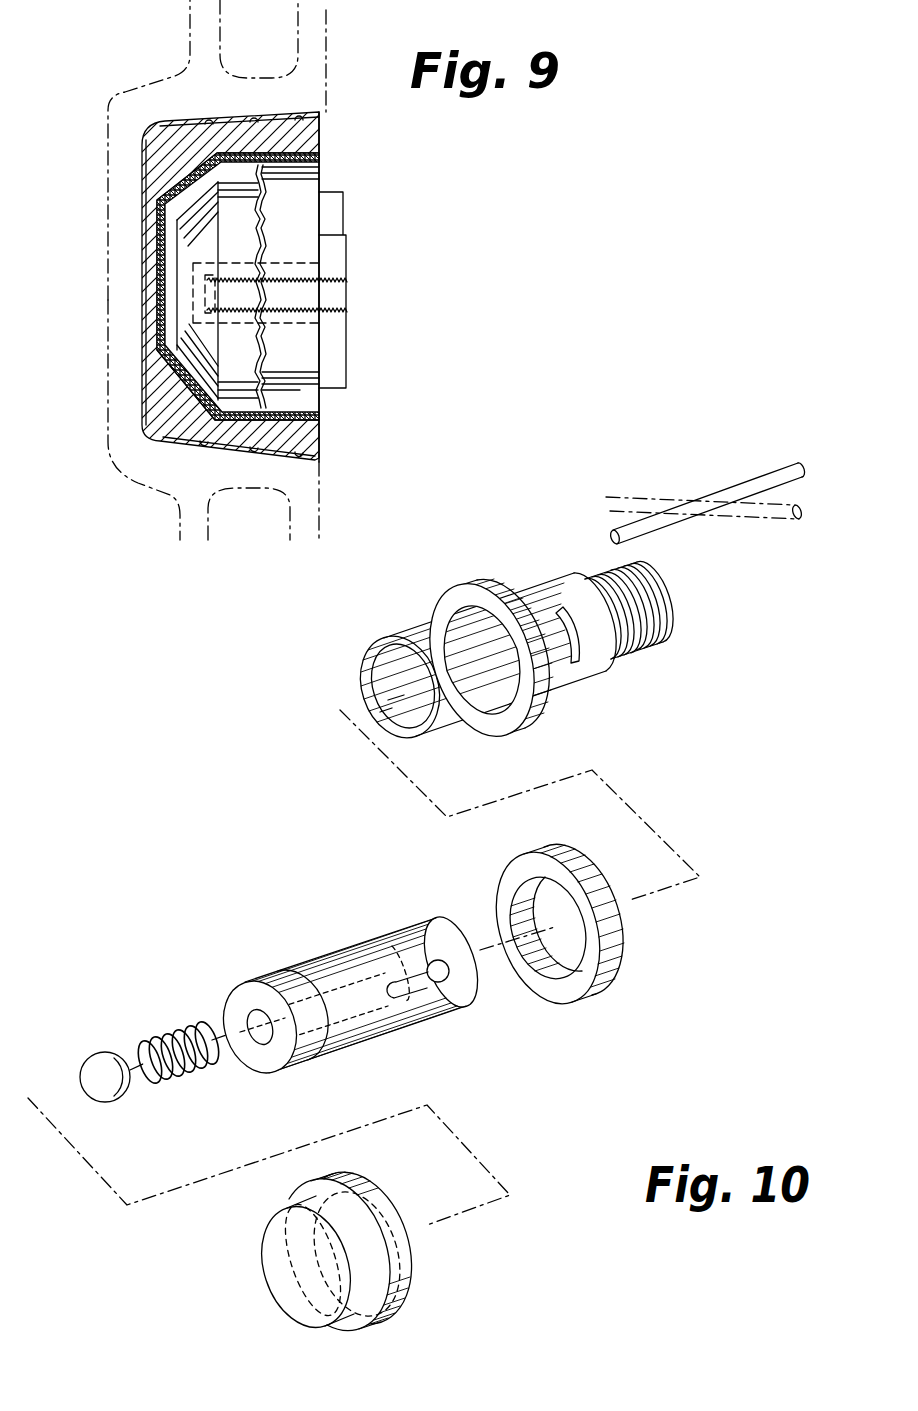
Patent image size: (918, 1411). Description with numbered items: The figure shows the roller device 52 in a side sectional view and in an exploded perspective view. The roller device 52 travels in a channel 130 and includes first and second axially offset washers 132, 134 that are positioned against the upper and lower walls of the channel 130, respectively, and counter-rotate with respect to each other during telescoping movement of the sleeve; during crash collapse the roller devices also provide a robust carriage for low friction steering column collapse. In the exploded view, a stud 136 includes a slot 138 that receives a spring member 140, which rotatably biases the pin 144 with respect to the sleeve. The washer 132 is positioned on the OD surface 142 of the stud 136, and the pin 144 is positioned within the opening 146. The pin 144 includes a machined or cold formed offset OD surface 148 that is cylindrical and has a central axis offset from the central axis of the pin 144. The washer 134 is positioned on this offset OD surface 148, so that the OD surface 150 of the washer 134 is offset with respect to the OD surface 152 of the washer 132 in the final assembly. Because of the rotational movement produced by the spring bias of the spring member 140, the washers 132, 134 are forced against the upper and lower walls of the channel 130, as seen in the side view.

In FIG. 9, the roller device 52 is at (332, 213).
In FIG. 9, the channel 130 is at (214, 165).
In FIG. 9, the first washer 132 is at (298, 240).
In FIG. 10, the first washer 132 is at (383, 994).
In FIG. 9, the second washer 134 is at (245, 345).
In FIG. 10, the second washer 134 is at (384, 1258).
In FIG. 10, the stud 136 is at (481, 618).
In FIG. 10, the slot 138 is at (613, 650).
In FIG. 10, the spring member 140 is at (710, 503).
In FIG. 10, the OD surface 142 is at (450, 643).
In FIG. 10, the pin 144 is at (353, 942).
In FIG. 10, the opening 146 is at (387, 683).
In FIG. 10, the offset OD surface 148 is at (268, 973).
In FIG. 10, the OD surface of the washer 134 150 is at (390, 1248).
In FIG. 10, the OD surface of the washer 132 152 is at (617, 925).